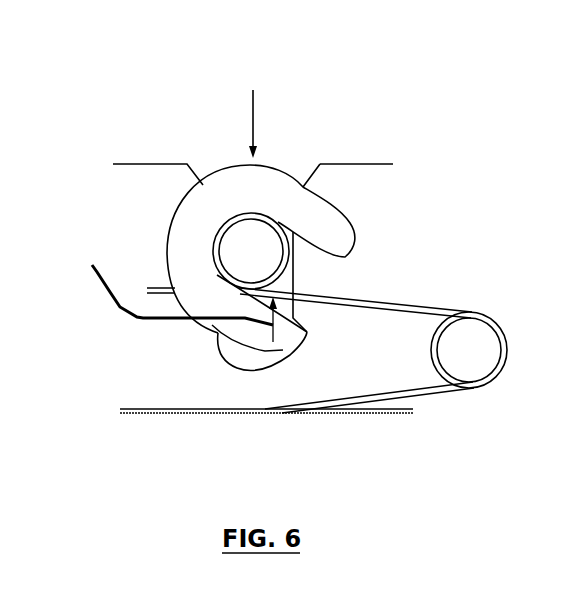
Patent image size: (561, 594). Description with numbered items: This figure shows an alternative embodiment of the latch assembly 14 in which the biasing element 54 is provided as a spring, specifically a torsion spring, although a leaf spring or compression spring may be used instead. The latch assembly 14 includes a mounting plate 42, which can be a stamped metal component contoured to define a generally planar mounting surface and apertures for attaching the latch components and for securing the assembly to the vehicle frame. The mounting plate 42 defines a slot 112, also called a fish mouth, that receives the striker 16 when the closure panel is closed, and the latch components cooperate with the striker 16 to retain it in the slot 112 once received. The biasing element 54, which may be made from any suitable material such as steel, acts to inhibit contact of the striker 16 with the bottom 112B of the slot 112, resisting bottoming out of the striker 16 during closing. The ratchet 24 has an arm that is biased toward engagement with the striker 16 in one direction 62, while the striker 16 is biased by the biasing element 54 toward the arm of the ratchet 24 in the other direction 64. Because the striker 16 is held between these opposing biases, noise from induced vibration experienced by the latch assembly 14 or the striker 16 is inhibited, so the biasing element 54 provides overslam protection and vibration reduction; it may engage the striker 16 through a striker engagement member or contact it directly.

The latch assembly 14 is at (168, 183).
The slot 112 is at (226, 193).
The bottom of the slot 112B is at (229, 378).
The striker 16 is at (274, 213).
The direction 62 is at (255, 107).
The direction 64 is at (92, 265).
The ratchet 24 is at (155, 333).
The biasing element 54 is at (487, 320).
The mounting plate 42 is at (388, 415).